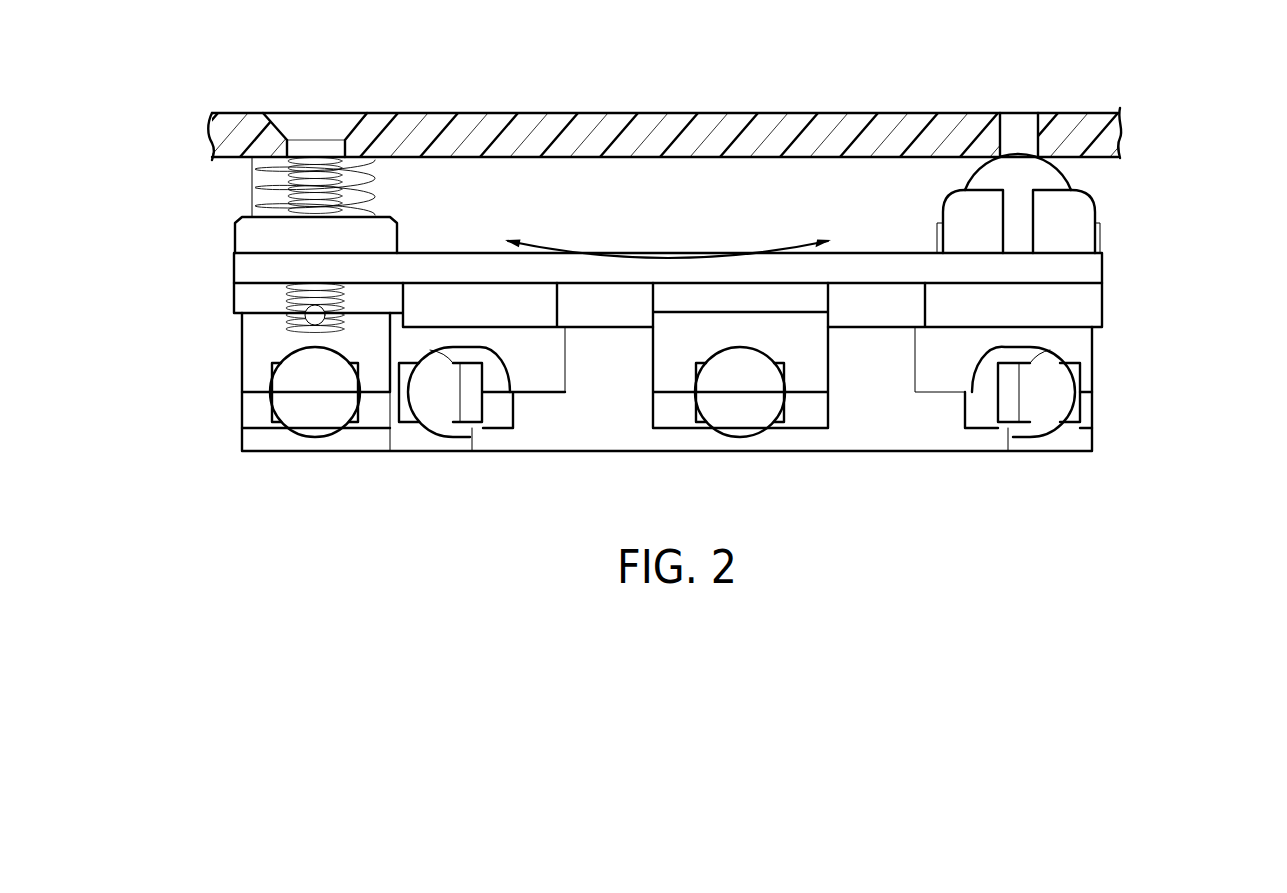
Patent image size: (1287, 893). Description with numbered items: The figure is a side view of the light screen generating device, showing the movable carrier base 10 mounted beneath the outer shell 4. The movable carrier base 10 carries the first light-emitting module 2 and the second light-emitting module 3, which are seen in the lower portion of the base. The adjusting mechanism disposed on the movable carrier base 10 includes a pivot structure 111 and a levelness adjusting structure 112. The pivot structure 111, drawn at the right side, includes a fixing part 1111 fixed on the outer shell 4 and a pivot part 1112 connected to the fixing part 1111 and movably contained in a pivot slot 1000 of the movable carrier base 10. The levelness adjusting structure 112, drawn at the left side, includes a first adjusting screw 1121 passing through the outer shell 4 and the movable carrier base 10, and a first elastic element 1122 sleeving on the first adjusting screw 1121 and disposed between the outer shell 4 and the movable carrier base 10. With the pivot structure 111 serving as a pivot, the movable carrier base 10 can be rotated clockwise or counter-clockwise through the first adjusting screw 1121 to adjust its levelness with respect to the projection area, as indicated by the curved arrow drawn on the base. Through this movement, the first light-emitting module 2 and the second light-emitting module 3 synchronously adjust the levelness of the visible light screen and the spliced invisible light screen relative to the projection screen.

The outer shell 4 is at (648, 102).
The movable carrier base 10 is at (1075, 268).
The first light-emitting module 2 is at (742, 430).
The second light-emitting module 3 is at (316, 430).
The pivot slot 1000 is at (1018, 215).
The pivot structure 111 is at (1121, 127).
The fixing part 1111 is at (1017, 122).
The pivot part 1112 is at (1030, 178).
The levelness adjusting structure 112 is at (219, 207).
The first adjusting screw 1121 is at (292, 125).
The first elastic element 1122 is at (262, 193).